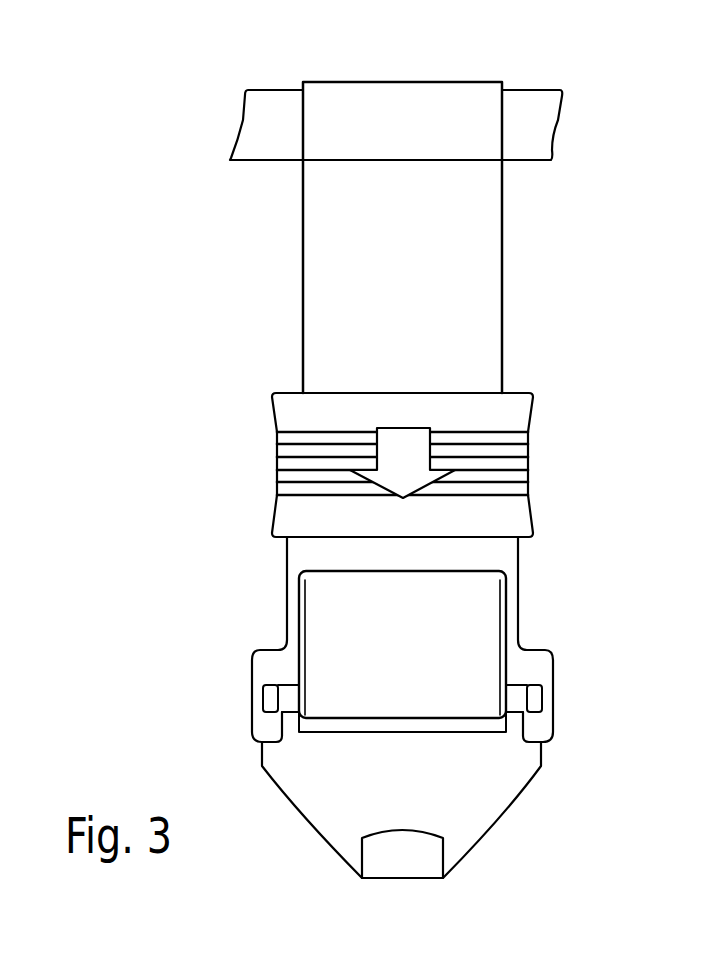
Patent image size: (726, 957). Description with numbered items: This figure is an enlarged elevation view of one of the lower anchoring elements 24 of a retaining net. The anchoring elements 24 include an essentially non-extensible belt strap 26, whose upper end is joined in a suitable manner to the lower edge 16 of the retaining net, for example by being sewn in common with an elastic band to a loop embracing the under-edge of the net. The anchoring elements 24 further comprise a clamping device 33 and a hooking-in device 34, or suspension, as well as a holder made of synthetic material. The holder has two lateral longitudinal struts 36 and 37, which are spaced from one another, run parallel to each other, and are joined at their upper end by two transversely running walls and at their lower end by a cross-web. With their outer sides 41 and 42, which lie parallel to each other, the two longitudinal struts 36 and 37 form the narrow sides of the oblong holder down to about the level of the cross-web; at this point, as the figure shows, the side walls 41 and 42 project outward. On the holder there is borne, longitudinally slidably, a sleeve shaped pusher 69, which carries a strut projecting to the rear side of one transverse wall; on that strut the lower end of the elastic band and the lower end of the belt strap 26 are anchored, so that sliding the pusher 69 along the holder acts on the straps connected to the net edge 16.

The lower edge 16 is at (543, 90).
The lower anchoring elements 24 is at (494, 309).
The belt strap 26 is at (424, 323).
The sleeve shaped pusher 69 is at (525, 408).
The hooking-in device 34 is at (393, 690).
The outer side 42 is at (287, 570).
The longitudinal strut 37 is at (287, 618).
The longitudinal strut 36 is at (513, 608).
The outer side 41 is at (520, 630).
The clamping device 33 is at (565, 681).